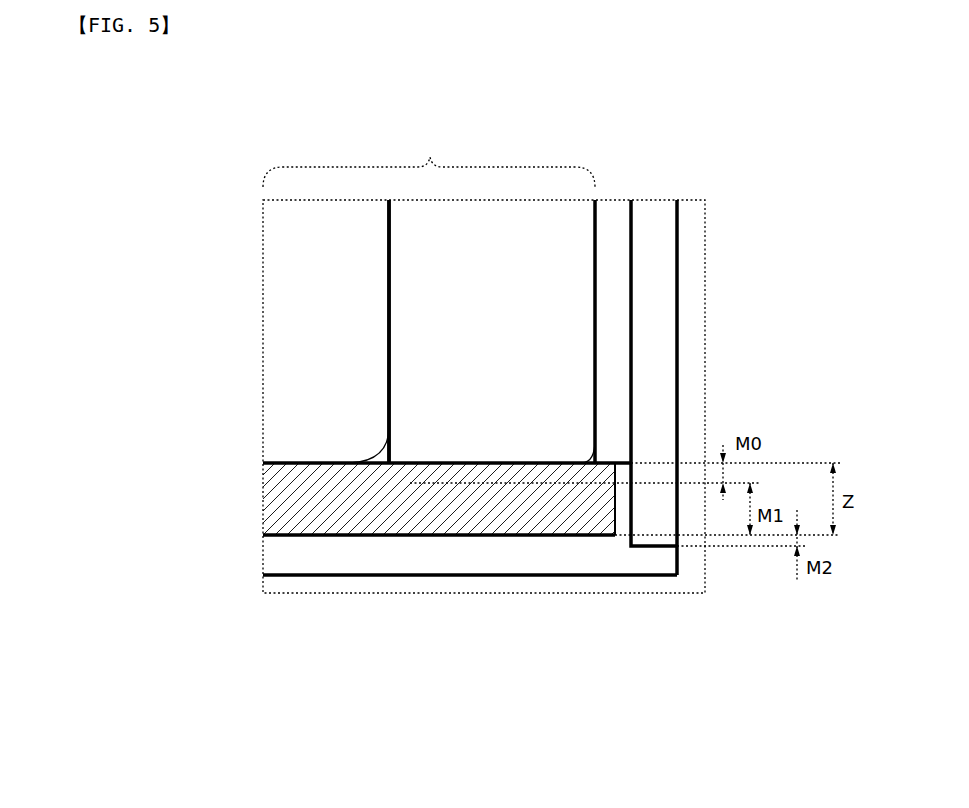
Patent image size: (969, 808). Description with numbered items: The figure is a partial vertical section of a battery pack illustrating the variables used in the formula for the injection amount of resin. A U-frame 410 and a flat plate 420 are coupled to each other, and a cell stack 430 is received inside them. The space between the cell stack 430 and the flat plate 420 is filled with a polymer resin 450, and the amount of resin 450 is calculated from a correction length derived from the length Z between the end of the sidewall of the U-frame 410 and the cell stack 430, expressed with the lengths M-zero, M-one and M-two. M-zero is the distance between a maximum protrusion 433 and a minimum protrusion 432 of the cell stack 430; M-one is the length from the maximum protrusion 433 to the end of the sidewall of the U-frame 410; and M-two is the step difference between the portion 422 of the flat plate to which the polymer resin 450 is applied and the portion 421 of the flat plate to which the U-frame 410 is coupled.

The U-frame 410 is at (660, 260).
The flat plate 420 is at (405, 550).
The portion of the flat plate to which the U-frame is coupled 421 is at (650, 548).
The portion of the flat plate to which the polymer resin is applied 422 is at (565, 537).
The cell stack 430 is at (429, 296).
The minimum protrusion 432 is at (335, 467).
The maximum protrusion 433 is at (480, 483).
The polymer resin 450 is at (275, 505).